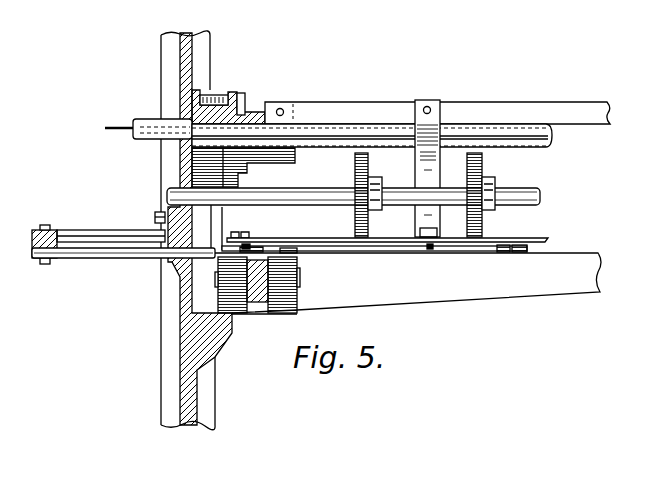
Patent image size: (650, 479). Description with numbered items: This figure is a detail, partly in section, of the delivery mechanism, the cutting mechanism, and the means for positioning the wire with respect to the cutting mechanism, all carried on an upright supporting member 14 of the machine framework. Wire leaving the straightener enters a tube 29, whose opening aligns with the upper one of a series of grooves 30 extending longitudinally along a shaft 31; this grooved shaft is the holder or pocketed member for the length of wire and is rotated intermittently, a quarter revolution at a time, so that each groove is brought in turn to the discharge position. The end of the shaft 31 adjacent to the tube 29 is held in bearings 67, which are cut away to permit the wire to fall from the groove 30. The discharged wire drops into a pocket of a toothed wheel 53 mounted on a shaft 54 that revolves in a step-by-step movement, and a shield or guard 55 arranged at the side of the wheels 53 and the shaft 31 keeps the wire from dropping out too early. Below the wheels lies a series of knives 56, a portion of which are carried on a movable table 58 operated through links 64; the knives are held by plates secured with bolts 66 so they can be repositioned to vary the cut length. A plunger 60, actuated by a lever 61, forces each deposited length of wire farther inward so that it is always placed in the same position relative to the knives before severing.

The upright supporting member 14 is at (177, 350).
The tube 29 is at (147, 120).
The groove 30 is at (190, 152).
The shaft 31 is at (314, 143).
The toothed wheel 53 is at (355, 215).
The shaft 54 is at (512, 185).
The shield or guard 55 is at (437, 113).
The knife 56 is at (522, 248).
The movable table 58 is at (407, 283).
The plunger 60 is at (125, 252).
The lever 61 is at (45, 263).
The link 64 is at (298, 283).
The bolt 66 is at (240, 234).
The bearing 67 is at (235, 117).